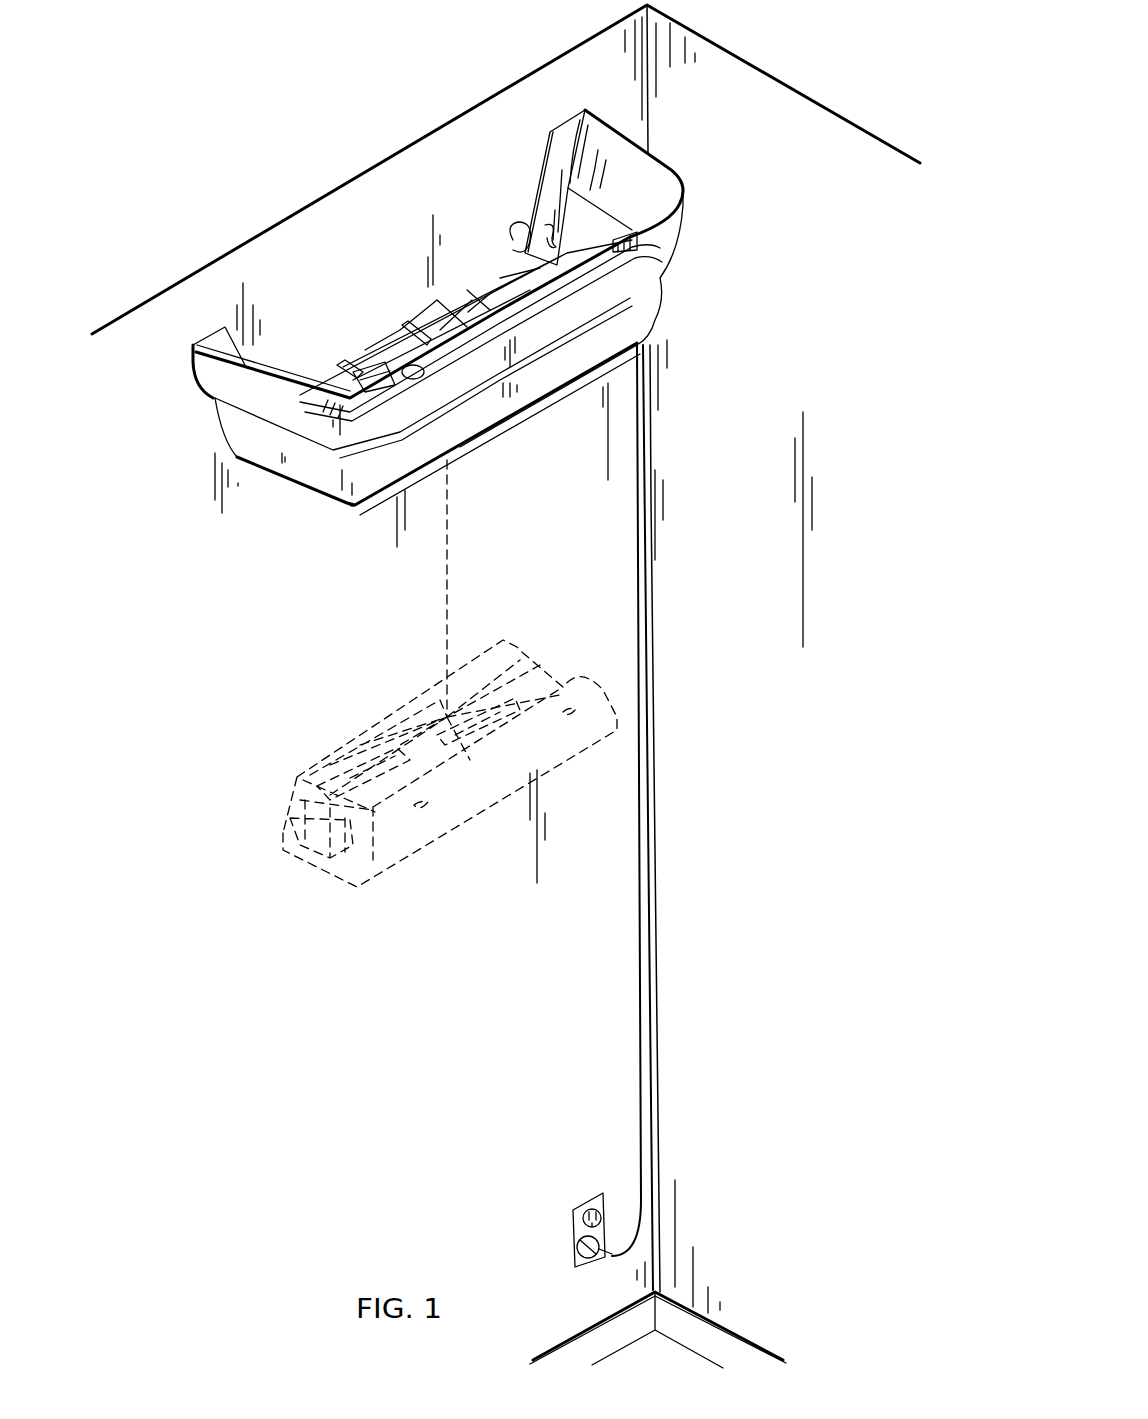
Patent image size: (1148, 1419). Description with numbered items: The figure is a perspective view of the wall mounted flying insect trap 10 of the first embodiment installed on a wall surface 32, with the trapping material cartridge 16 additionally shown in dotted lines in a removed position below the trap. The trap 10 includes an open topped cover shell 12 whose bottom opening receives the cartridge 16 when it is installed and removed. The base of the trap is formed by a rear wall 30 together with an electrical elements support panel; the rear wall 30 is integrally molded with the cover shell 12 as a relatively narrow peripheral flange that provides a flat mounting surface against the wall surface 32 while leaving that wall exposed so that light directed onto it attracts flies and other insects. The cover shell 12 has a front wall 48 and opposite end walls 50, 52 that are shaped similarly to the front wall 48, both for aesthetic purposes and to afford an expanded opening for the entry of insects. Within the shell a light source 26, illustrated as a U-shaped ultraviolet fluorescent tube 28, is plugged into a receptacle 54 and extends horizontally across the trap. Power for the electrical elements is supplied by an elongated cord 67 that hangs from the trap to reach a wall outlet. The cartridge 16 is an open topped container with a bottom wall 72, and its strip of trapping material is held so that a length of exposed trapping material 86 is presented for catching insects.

The trap 10 is at (188, 443).
The cover shell 12 is at (461, 310).
The trapping material cartridge 16 is at (377, 510).
The light source 26 is at (553, 293).
The U-shaped ultra violet fluorescent tube 28 is at (612, 332).
The rear wall 30 is at (562, 143).
The wall surface 32 is at (613, 62).
The shell front wall 48 is at (547, 380).
The end wall 50 is at (265, 445).
The end wall 52 is at (627, 167).
The receptacle 54 is at (373, 400).
The cord 67 is at (654, 990).
The bottom wall 72 is at (307, 833).
The exposed trapping material 86 is at (430, 322).